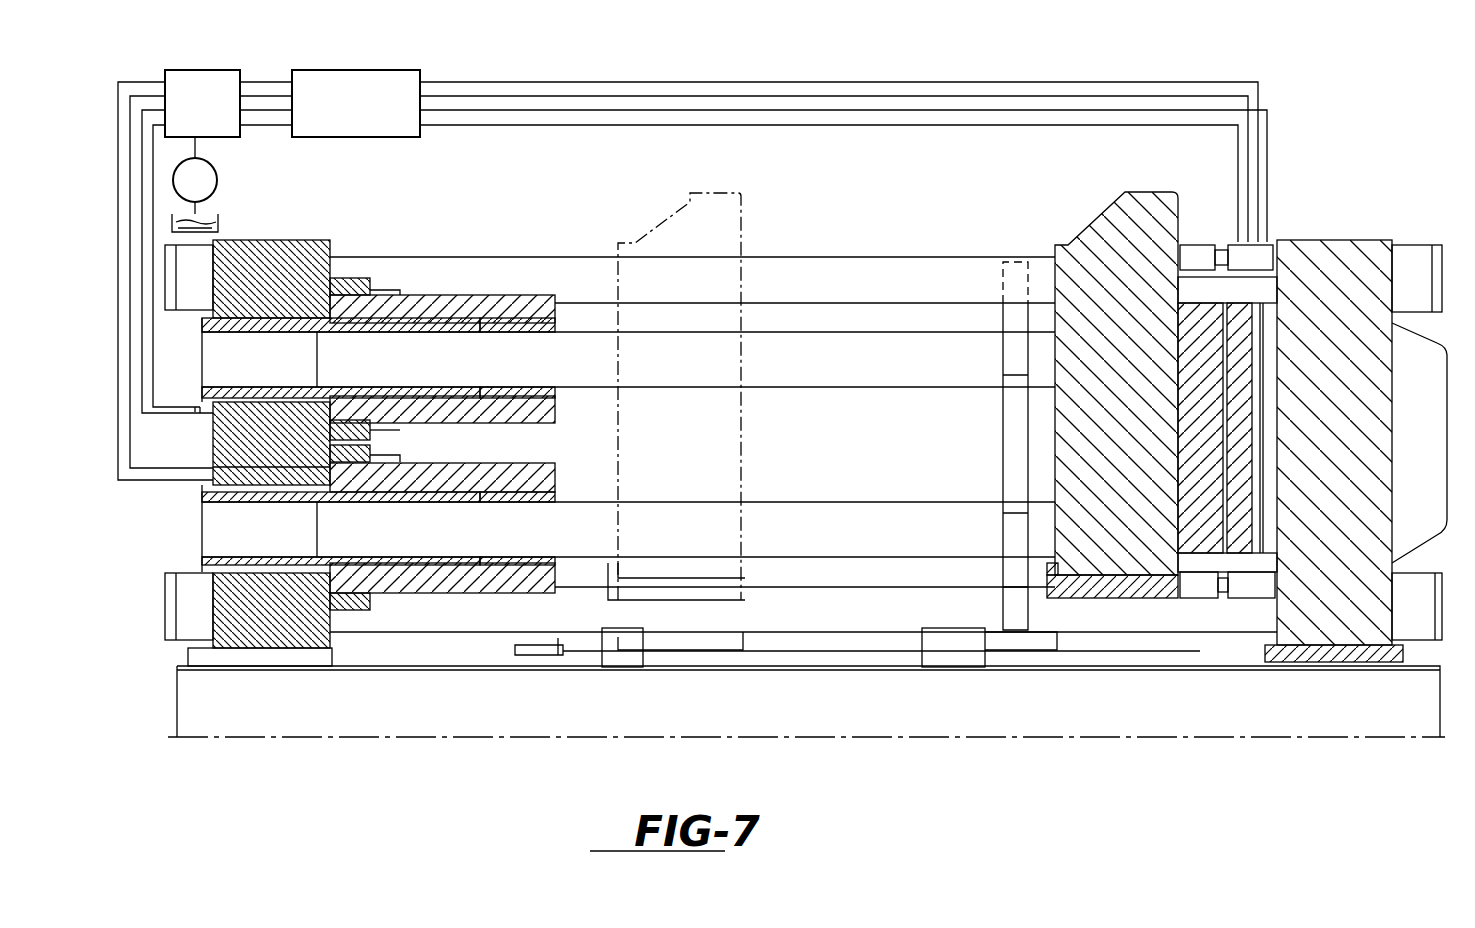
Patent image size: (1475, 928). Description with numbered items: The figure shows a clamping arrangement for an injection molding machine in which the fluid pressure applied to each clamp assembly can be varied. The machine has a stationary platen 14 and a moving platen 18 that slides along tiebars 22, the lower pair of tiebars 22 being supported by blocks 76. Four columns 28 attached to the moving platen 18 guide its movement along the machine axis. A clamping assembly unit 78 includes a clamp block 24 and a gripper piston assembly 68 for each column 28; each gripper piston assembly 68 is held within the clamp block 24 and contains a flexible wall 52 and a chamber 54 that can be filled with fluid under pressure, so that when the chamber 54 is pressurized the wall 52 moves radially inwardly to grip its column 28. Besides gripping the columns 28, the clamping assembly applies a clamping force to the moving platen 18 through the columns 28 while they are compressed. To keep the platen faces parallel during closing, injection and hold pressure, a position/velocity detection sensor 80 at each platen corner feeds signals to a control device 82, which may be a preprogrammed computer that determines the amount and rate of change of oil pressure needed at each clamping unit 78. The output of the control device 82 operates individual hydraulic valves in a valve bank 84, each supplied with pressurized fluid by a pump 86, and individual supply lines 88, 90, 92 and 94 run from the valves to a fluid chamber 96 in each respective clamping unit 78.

The stationary platen 14 is at (1350, 457).
The moving platen 18 is at (1135, 404).
The tiebars 22 is at (885, 263).
The clamp block 24 is at (280, 608).
The columns 28 is at (888, 372).
The flexible wall 52 is at (455, 327).
The chamber 54 is at (517, 327).
The gripper piston assembly 68 is at (510, 300).
The blocks 76 is at (608, 665).
The clamping assembly unit 78 is at (296, 234).
The position/velocity detection sensor 80 is at (1197, 248).
The control device 82 is at (406, 69).
The valve bank 84 is at (230, 69).
The pump 86 is at (217, 182).
The supply line 88 is at (133, 78).
The supply line 90 is at (150, 92).
The supply line 92 is at (170, 418).
The supply line 94 is at (195, 414).
The fluid chamber 96 is at (332, 397).